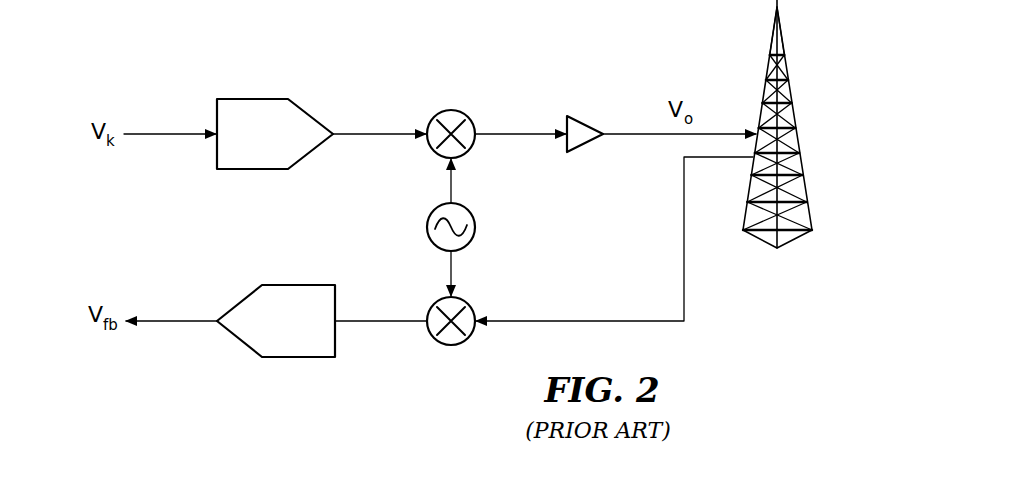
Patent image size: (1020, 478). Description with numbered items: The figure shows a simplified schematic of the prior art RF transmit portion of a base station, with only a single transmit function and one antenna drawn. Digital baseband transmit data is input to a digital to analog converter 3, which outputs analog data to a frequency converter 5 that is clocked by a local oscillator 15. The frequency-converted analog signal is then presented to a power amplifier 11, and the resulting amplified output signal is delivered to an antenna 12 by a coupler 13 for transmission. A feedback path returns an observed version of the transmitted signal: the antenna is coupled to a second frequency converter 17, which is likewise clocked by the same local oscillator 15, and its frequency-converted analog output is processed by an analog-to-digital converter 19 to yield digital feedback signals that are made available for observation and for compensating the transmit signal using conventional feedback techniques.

The digital to analog converter 3 is at (250, 99).
The frequency converter 5 is at (451, 110).
The power amplifier 11 is at (587, 124).
The antenna 12 is at (795, 108).
The coupler 13 is at (637, 136).
The local oscillator 15 is at (426, 227).
The second frequency converter 17 is at (449, 346).
The analog-to-digital converter 19 is at (300, 357).